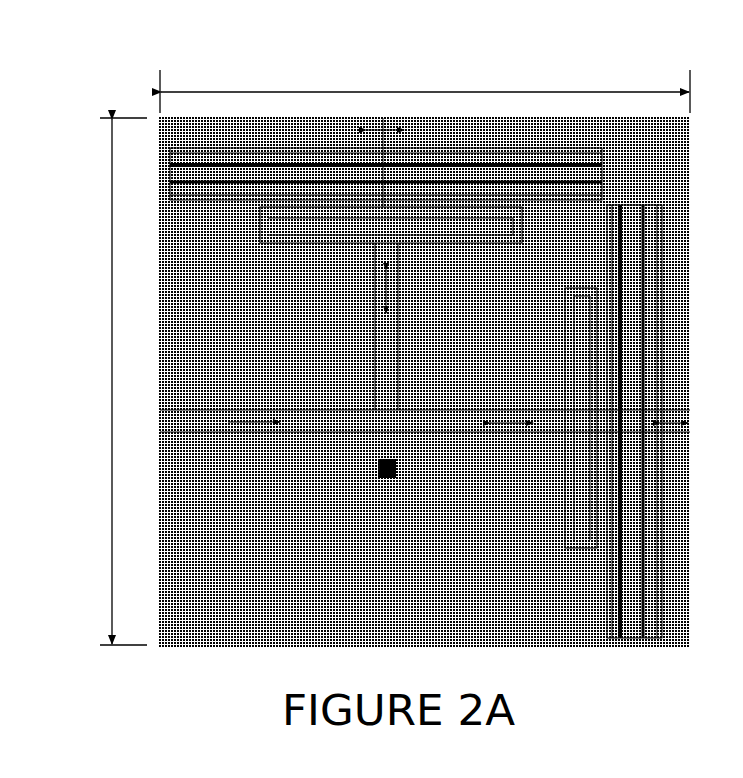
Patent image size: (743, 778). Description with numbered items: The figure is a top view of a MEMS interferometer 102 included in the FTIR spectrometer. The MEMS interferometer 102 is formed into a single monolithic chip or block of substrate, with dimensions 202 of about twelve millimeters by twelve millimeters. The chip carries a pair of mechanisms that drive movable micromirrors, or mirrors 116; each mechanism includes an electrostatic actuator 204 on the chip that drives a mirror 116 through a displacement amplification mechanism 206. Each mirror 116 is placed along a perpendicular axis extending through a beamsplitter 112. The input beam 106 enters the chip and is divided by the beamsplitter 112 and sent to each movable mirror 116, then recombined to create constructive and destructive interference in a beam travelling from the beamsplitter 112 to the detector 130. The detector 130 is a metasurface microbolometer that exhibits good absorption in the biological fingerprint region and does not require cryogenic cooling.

The MEMS interferometer 102 is at (646, 28).
The dimensions 202 is at (440, 91).
The electrostatic actuator 204 is at (166, 177).
The displacement amplification mechanism 206 is at (252, 226).
The mirror 116 is at (390, 242).
The beamsplitter 112 is at (376, 432).
The input beam 106 is at (250, 424).
The detector 130 is at (378, 470).